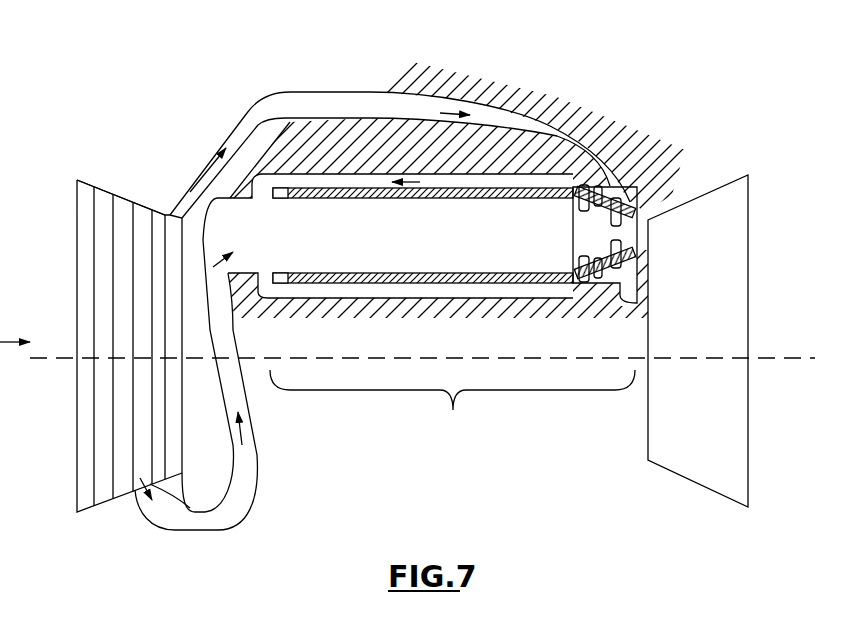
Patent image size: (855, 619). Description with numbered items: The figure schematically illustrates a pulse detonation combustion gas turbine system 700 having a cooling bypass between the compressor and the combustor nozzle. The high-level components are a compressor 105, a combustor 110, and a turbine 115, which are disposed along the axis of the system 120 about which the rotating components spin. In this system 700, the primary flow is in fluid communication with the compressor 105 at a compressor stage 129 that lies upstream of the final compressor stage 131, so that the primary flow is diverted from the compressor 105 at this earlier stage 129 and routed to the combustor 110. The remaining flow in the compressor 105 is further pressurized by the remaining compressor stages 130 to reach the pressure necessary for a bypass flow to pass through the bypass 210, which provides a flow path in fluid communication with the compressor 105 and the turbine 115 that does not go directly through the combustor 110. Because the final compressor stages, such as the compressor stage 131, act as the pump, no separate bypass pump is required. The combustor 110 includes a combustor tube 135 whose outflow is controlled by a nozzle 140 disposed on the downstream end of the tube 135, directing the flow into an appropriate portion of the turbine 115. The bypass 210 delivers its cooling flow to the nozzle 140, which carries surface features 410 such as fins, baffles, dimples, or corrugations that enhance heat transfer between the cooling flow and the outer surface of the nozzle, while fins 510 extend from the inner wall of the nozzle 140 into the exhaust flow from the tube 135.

The system 700 is at (522, 55).
The compressor 105 is at (77, 285).
The combustor 110 is at (426, 307).
The turbine 115 is at (716, 316).
The axis of the system 120 is at (553, 358).
The compressor stage 129 is at (140, 207).
The remaining compressor stages 130 is at (173, 477).
The final compressor stage 131 is at (175, 400).
The combustor tube 135 is at (374, 249).
The nozzle 140 is at (608, 250).
The bypass 210 is at (315, 183).
The surface features 410 is at (655, 200).
The fins 510 is at (573, 210).